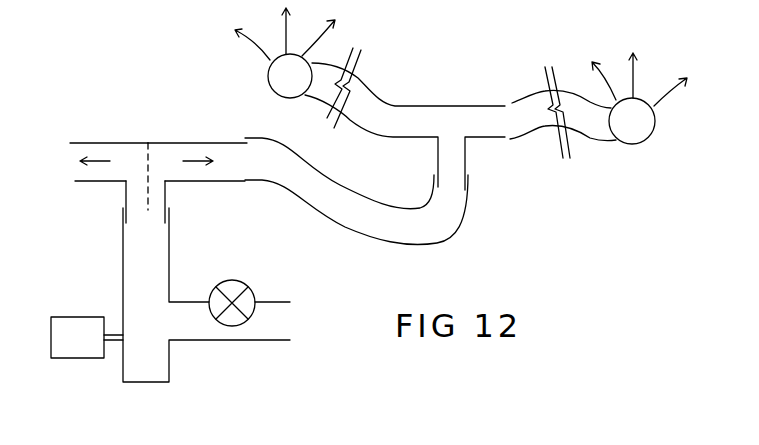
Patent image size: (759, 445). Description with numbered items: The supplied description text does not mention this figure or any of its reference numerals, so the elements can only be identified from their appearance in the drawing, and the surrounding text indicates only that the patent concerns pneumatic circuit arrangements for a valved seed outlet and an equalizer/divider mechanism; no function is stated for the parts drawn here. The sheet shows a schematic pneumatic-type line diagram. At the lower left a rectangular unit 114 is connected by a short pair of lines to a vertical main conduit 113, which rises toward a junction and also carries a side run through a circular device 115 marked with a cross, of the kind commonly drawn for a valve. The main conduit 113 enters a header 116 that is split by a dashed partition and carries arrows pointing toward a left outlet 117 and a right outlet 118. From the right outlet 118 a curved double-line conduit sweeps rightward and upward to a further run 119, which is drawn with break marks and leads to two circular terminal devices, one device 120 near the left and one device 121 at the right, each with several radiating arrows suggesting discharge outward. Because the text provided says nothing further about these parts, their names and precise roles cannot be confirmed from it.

The main tube 113 is at (143, 370).
The pump/source unit 114 is at (80, 350).
The valve 115 is at (236, 321).
The T-junction with dashed partition 116 is at (157, 132).
The left outlet branch 117 is at (67, 188).
The right outlet branch 118 is at (239, 195).
The upper distribution tube 119 is at (452, 99).
The first spray nozzle 120 is at (268, 78).
The second spray nozzle 121 is at (633, 130).